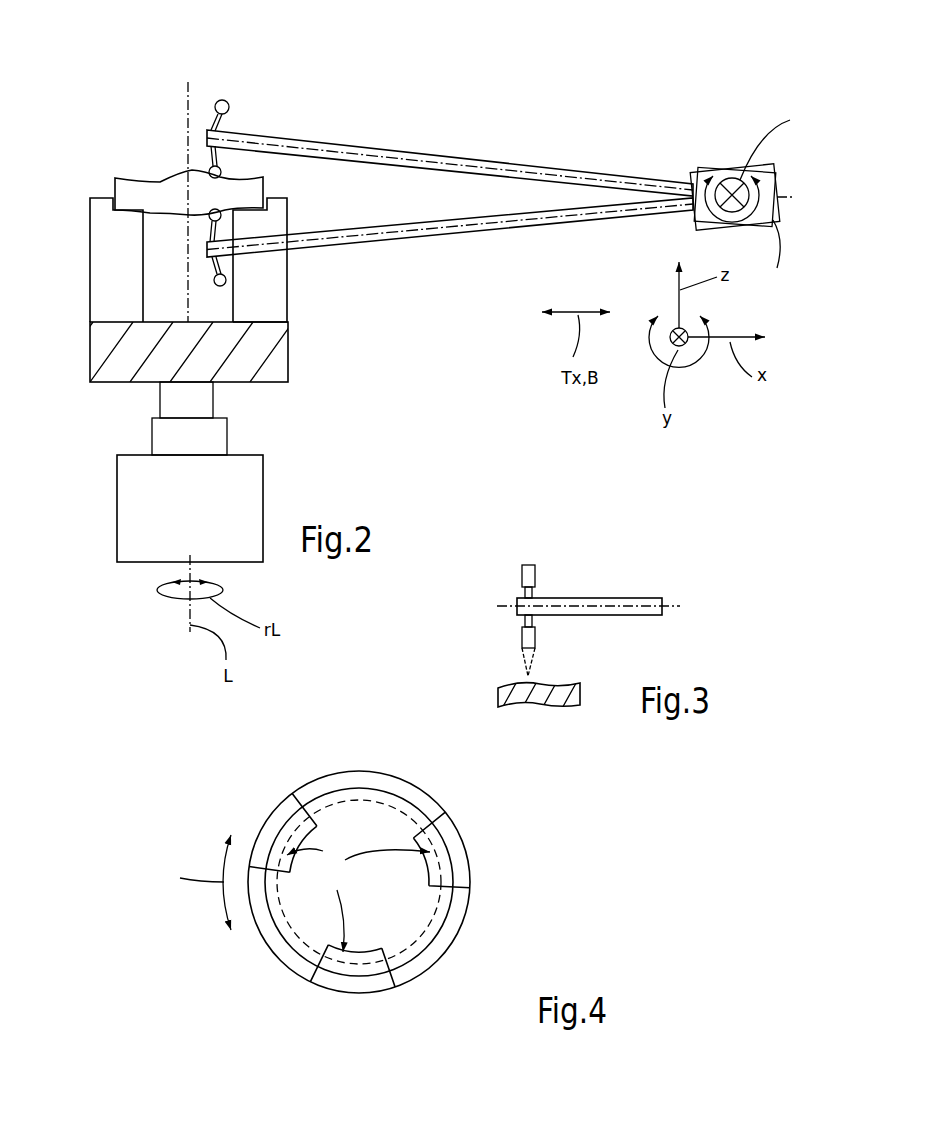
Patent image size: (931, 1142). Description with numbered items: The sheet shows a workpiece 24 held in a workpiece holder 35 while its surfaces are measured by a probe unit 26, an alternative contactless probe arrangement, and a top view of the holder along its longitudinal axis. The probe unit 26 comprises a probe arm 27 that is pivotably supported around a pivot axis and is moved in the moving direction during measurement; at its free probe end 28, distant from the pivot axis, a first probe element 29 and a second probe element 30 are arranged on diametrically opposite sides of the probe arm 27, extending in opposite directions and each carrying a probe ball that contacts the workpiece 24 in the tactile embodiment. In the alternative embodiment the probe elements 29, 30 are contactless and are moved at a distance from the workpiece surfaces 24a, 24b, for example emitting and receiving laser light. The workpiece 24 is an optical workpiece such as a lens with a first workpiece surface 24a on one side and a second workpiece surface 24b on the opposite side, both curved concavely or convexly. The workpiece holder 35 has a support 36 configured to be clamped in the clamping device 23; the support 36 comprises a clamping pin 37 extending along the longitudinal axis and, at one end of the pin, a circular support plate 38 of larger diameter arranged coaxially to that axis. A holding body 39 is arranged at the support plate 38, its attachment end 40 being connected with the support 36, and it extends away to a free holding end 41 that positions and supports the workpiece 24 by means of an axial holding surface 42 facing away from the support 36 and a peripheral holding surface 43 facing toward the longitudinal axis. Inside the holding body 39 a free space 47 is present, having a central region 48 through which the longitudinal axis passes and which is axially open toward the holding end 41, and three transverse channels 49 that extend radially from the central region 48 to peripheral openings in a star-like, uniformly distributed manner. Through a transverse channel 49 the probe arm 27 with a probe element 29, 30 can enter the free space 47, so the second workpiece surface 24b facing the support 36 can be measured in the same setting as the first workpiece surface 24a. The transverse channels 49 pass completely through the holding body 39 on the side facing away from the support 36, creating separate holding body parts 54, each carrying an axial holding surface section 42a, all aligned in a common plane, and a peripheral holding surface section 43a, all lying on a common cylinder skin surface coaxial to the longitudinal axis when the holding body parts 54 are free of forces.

In FIG. 2, the clamping device 23 is at (128, 507).
In FIG. 2, the workpiece 24 is at (113, 178).
In FIG. 3, the workpiece 24 is at (556, 705).
In FIG. 4, the workpiece 24 is at (357, 800).
In FIG. 2, the first workpiece surface 24a is at (160, 168).
In FIG. 2, the second workpiece surface 24b is at (148, 217).
In FIG. 2, the probe unit 26 is at (745, 115).
In FIG. 2, the probe arm 27 is at (523, 200).
In FIG. 3, the probe arm 27 is at (623, 598).
In FIG. 2, the free probe end 28 is at (188, 120).
In FIG. 2, the first probe element 29 is at (221, 172).
In FIG. 3, the first probe element 29 is at (537, 638).
In FIG. 2, the second probe element 30 is at (229, 104).
In FIG. 3, the second probe element 30 is at (537, 578).
In FIG. 2, the workpiece holder 35 is at (299, 340).
In FIG. 4, the workpiece holder 35 is at (499, 820).
In FIG. 2, the support 36 is at (78, 364).
In FIG. 2, the clamping pin 37 is at (175, 398).
In FIG. 2, the support plate 38 is at (266, 378).
In FIG. 4, the support plate 38 is at (457, 933).
In FIG. 2, the holding body 39 is at (294, 262).
In FIG. 2, the attachment end 40 is at (288, 321).
In FIG. 2, the holding end 41 is at (86, 190).
In FIG. 2, the axial holding surface 42 is at (134, 200).
In FIG. 4, the axial holding surface section 42a is at (358, 900).
In FIG. 2, the peripheral holding surface 43 is at (147, 213).
In FIG. 4, the peripheral holding surface section 43a is at (298, 823).
In FIG. 2, the free space 47 is at (155, 252).
In FIG. 4, the free space 47 is at (389, 832).
In FIG. 2, the central region 48 is at (193, 278).
In FIG. 4, the central region 48 is at (396, 893).
In FIG. 2, the transverse channel 49 is at (105, 227).
In FIG. 4, the transverse channel 49 is at (272, 933).
In FIG. 2, the holding body part 54 is at (125, 298).
In FIG. 4, the holding body part 54 is at (260, 830).